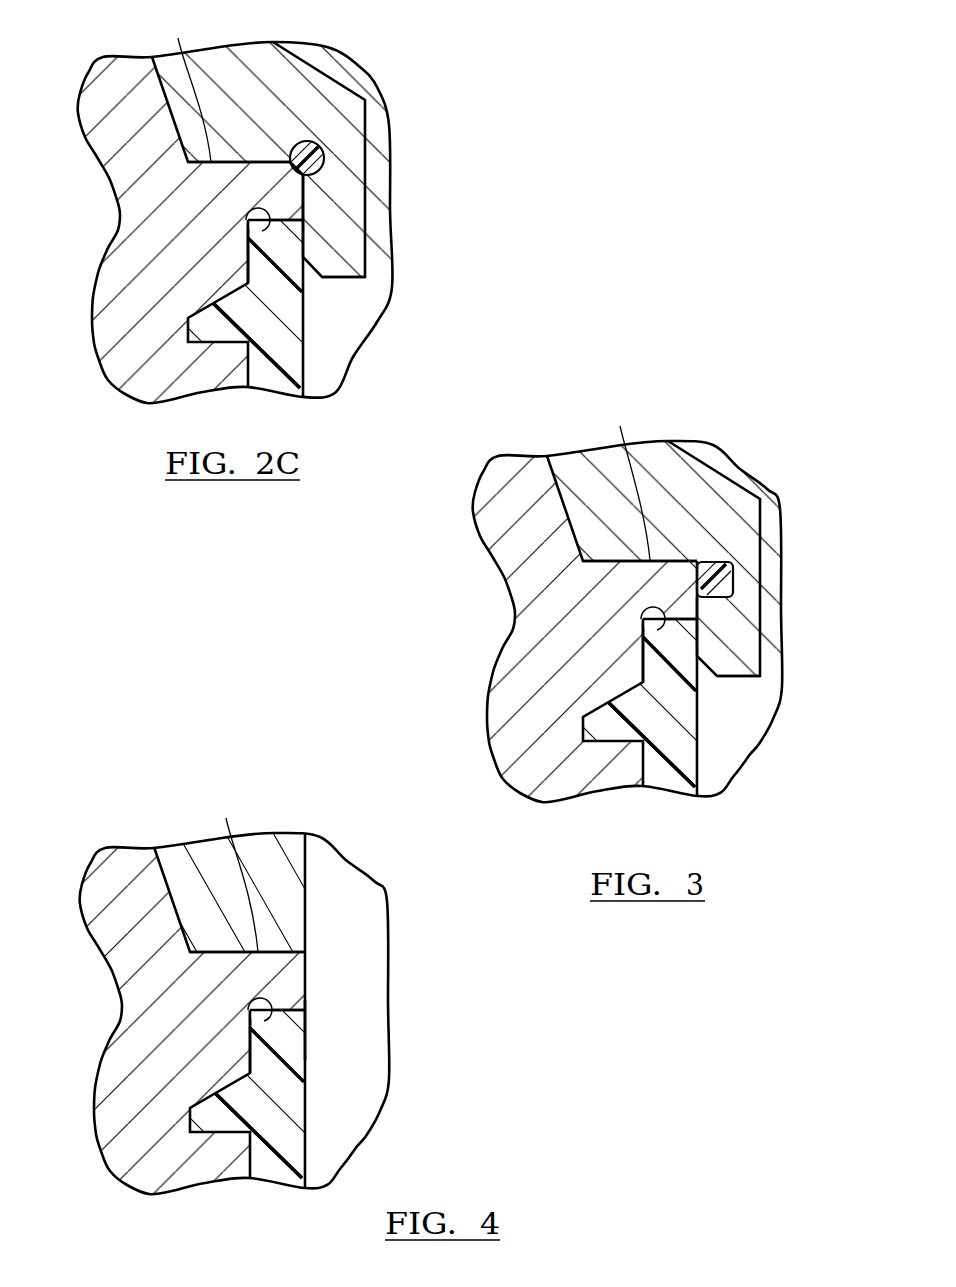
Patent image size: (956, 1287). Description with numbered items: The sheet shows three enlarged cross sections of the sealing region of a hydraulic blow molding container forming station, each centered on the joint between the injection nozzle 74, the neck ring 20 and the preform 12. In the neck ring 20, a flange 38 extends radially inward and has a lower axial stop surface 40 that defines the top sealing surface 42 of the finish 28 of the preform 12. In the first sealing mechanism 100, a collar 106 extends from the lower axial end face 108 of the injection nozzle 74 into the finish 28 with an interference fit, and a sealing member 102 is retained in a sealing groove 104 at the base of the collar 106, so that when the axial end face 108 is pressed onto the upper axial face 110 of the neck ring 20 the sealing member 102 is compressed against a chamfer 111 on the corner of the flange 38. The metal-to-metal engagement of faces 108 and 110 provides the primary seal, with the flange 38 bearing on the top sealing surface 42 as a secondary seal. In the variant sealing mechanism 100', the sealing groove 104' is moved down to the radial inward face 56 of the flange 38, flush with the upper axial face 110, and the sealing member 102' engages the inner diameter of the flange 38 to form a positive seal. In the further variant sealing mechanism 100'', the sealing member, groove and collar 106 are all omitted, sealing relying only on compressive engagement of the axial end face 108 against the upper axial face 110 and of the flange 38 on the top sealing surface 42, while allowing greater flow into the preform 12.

In FIG. 2C, the sealing mechanism 100 is at (312, 222).
In FIG. 3, the sealing mechanism 100' is at (663, 577).
In FIG. 4, the sealing mechanism 100'' is at (207, 984).
In FIG. 2C, the preform 12 is at (270, 380).
In FIG. 3, the preform 12 is at (668, 780).
In FIG. 4, the preform 12 is at (278, 1170).
In FIG. 2C, the neck ring 20 is at (143, 380).
In FIG. 3, the neck ring 20 is at (542, 780).
In FIG. 4, the neck ring 20 is at (151, 1170).
In FIG. 2C, the finish 28 is at (273, 333).
In FIG. 3, the finish 28 is at (675, 748).
In FIG. 4, the finish 28 is at (287, 1140).
In FIG. 2C, the flange 38 is at (337, 242).
In FIG. 3, the flange 38 is at (733, 641).
In FIG. 4, the flange 38 is at (305, 1032).
In FIG. 2C, the lower axial stop surface 40 is at (250, 245).
In FIG. 3, the lower axial stop surface 40 is at (645, 645).
In FIG. 4, the lower axial stop surface 40 is at (252, 1035).
In FIG. 2C, the top sealing surface 42 is at (264, 206).
In FIG. 3, the top sealing surface 42 is at (659, 605).
In FIG. 4, the top sealing surface 42 is at (262, 996).
In FIG. 2C, the radial inward face 56 is at (280, 203).
In FIG. 3, the radial inward face 56 is at (678, 604).
In FIG. 4, the radial inward face 56 is at (282, 992).
In FIG. 2C, the injection nozzle 74 is at (254, 90).
In FIG. 3, the injection nozzle 74 is at (708, 508).
In FIG. 4, the injection nozzle 74 is at (318, 900).
In FIG. 2C, the sealing member 102 is at (382, 168).
In FIG. 3, the sealing member 102' is at (774, 557).
In FIG. 2C, the sealing groove 104 is at (327, 93).
In FIG. 3, the sealing groove 104' is at (773, 578).
In FIG. 2C, the collar 106 is at (345, 250).
In FIG. 3, the collar 106 is at (742, 660).
In FIG. 2C, the axial end face 108 is at (217, 164).
In FIG. 3, the axial end face 108 is at (612, 563).
In FIG. 4, the axial end face 108 is at (215, 954).
In FIG. 2C, the upper axial face 110 is at (187, 86).
In FIG. 3, the upper axial face 110 is at (627, 480).
In FIG. 4, the upper axial face 110 is at (234, 872).
In FIG. 2C, the chamfer 111 is at (313, 144).
In FIG. 3, the chamfer 111 is at (706, 553).